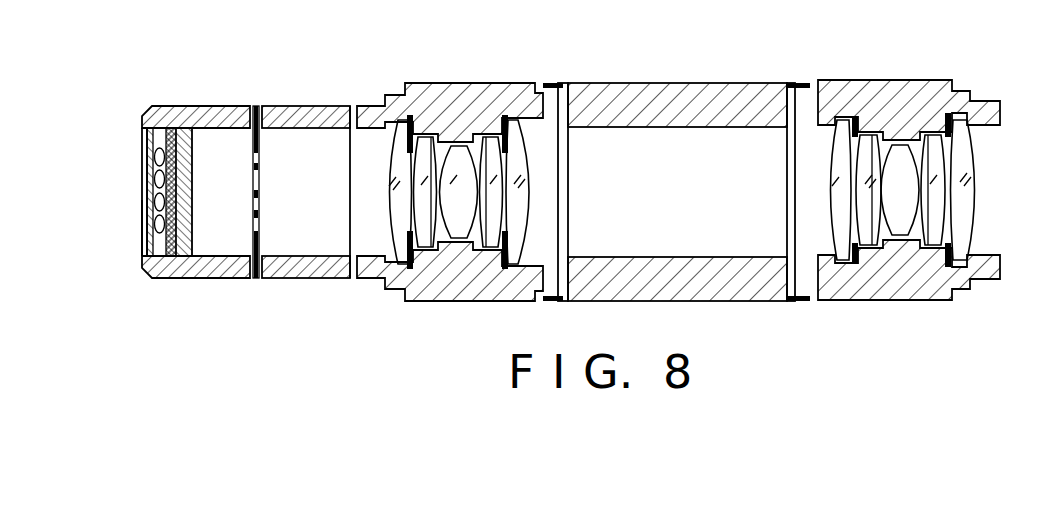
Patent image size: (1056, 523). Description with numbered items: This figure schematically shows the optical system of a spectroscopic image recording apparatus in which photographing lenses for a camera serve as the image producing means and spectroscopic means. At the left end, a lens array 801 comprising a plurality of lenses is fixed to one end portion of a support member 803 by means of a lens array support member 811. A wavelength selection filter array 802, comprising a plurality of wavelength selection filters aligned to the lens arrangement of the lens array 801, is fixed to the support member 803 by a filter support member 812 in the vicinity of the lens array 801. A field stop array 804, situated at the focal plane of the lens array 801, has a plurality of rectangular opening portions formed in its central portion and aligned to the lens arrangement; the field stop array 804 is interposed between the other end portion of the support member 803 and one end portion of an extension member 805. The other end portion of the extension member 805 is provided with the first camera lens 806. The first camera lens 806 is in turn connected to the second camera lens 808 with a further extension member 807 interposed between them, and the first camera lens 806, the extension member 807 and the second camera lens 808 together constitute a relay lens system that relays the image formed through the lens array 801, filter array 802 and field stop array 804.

The lens array 801 is at (140, 140).
The wavelength selection filter array 802 is at (168, 130).
The support member 803 is at (210, 106).
The field stop array 804 is at (257, 106).
The extension member 805 is at (333, 106).
The first camera lens 806 is at (460, 100).
The extension member 807 is at (732, 83).
The second camera lens 808 is at (895, 105).
The lens array support member 811 is at (142, 237).
The filter support member 812 is at (195, 256).